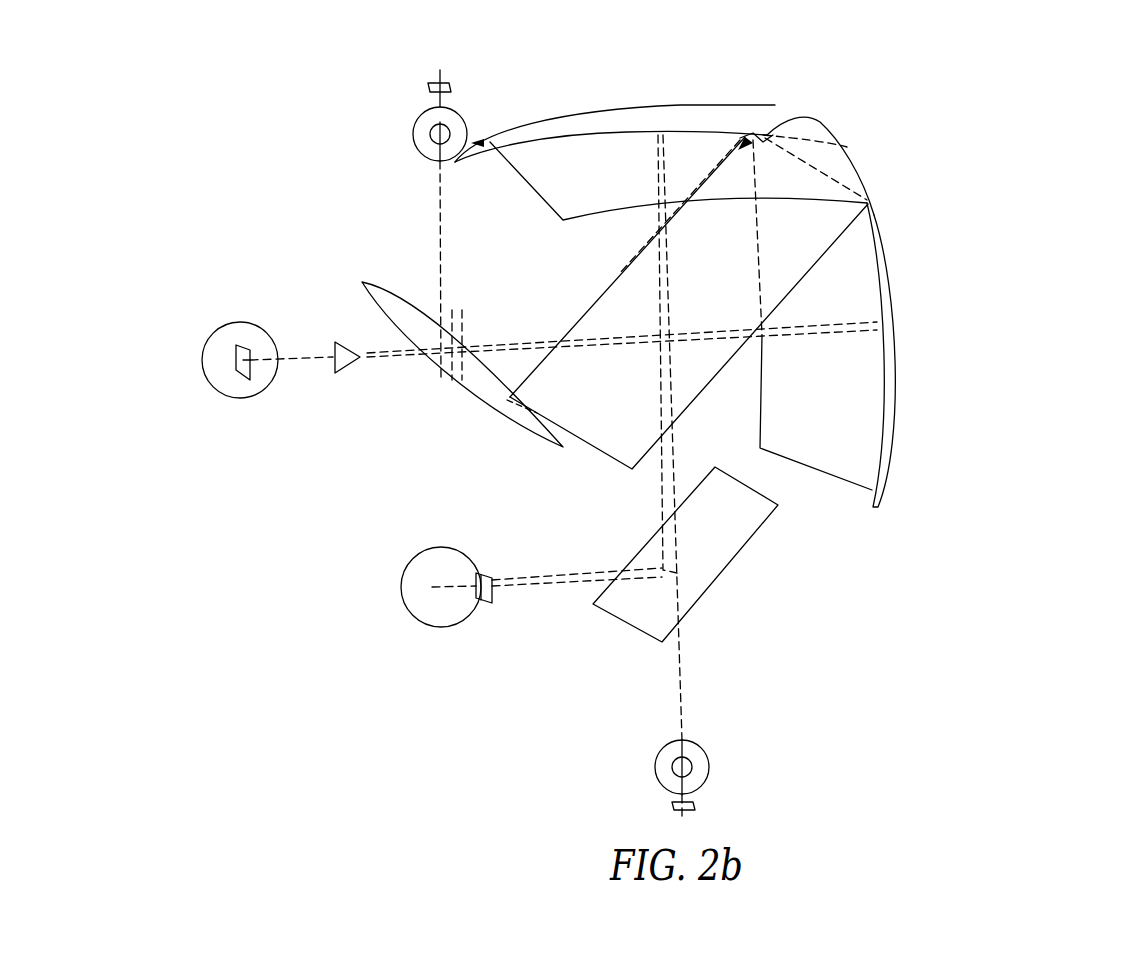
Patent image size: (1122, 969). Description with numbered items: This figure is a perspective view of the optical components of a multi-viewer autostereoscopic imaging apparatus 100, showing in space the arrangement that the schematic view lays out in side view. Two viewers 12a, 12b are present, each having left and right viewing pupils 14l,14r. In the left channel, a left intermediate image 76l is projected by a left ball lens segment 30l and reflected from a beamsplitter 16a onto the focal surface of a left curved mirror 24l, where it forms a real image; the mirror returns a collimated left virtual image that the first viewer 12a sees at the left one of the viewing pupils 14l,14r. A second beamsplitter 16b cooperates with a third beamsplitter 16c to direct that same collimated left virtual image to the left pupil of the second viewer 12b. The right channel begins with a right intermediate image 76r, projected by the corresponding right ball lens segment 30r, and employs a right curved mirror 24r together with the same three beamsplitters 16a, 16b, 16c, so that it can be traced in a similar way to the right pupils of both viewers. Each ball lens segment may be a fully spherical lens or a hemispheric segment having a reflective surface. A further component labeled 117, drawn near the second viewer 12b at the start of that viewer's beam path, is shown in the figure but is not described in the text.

The multi-viewer autostereoscopic imaging apparatus 100 is at (1000, 748).
The viewer 12a is at (223, 387).
The viewer 12b is at (425, 615).
The left and right viewing pupils 14l,14r is at (237, 398).
The beamsplitter 16a is at (478, 388).
The second beamsplitter 16b is at (580, 310).
The third beamsplitter 16c is at (760, 530).
The curved mirror 24r is at (775, 105).
The left curved mirror 24l is at (890, 473).
The left ball lens segment 30l is at (420, 150).
The right eye position 30r is at (707, 763).
The left intermediate image 76l is at (428, 87).
The right intermediate image 76r is at (670, 807).
The relay lens 117 is at (484, 573).